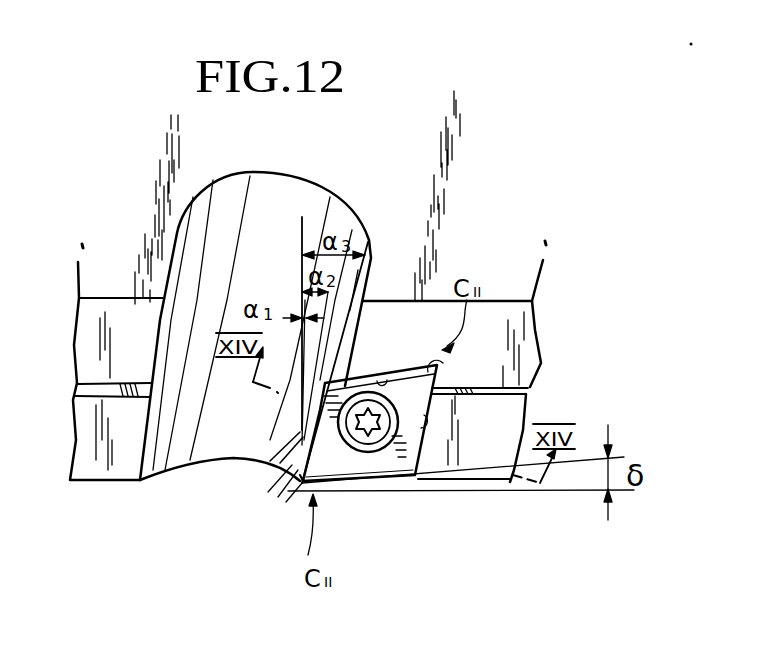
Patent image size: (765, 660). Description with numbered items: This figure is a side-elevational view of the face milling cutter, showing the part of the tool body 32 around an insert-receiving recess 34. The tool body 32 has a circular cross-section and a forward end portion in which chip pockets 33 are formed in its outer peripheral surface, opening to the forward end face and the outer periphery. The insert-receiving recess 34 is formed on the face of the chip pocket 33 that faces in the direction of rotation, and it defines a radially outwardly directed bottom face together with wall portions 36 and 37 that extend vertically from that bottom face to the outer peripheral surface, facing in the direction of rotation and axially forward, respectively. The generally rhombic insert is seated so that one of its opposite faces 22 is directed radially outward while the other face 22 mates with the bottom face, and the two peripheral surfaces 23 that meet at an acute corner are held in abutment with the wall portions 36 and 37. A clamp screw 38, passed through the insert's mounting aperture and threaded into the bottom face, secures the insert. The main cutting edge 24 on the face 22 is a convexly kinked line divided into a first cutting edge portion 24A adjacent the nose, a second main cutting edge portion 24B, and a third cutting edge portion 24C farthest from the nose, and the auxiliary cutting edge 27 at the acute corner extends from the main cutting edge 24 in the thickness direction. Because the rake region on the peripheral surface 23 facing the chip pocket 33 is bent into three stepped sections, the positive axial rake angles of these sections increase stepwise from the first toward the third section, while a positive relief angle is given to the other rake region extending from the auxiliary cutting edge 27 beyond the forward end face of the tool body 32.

The front and rear faces 22 is at (333, 470).
The peripheral surfaces 23 is at (346, 386).
The main cutting edge 24 is at (190, 470).
The first cutting edge portion 24A is at (294, 480).
The second main cutting edge portion 24B is at (288, 473).
The third cutting edge portion 24C is at (272, 465).
The auxiliary cutting edge 27 is at (298, 492).
The tool body 32 is at (115, 465).
The chip pocket 33 is at (280, 198).
The insert-receiving recess 34 is at (400, 398).
The wall portion 36 is at (440, 405).
The wall portion 37 is at (428, 362).
The clamp screw 38 is at (386, 453).